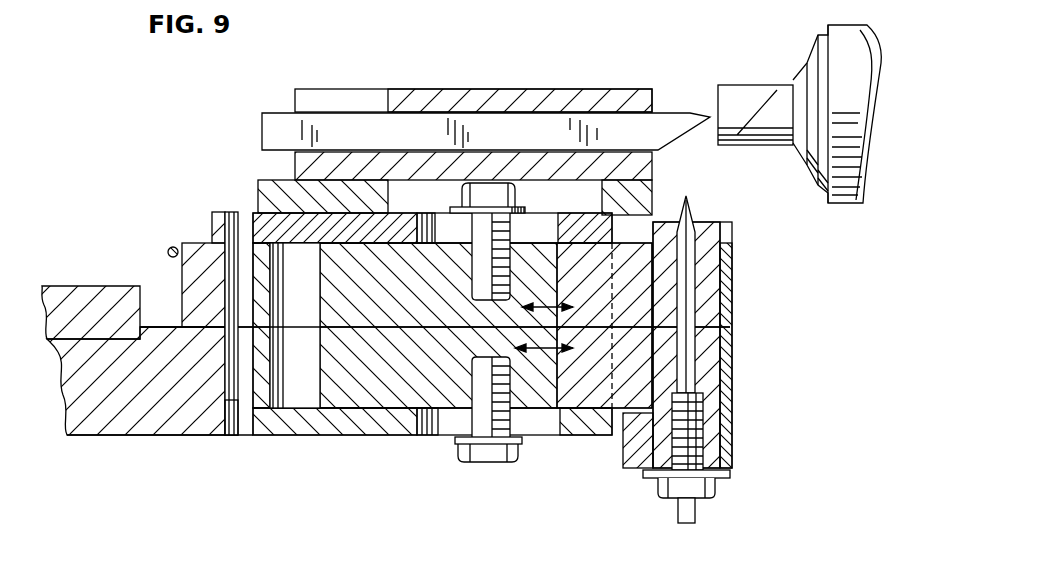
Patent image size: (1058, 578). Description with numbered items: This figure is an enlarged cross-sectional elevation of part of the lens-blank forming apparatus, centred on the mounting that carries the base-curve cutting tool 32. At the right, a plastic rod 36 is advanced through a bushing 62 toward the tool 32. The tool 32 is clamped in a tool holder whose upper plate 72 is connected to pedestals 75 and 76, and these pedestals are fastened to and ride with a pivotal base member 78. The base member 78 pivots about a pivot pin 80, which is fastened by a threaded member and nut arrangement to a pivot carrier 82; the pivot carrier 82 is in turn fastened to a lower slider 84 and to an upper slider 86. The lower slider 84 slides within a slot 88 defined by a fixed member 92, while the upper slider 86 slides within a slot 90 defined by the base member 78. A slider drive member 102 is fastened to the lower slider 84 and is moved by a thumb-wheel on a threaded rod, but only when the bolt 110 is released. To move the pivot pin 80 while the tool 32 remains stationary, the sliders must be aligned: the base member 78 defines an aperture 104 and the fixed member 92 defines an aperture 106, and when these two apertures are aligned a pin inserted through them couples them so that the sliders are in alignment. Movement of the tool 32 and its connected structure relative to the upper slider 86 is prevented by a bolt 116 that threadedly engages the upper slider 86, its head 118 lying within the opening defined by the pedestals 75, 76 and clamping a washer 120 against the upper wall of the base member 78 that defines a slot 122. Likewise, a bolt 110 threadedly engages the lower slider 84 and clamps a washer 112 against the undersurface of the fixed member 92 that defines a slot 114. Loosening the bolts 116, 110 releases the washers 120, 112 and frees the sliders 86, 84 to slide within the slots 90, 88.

The tool 32 is at (668, 128).
The rod 36 is at (752, 96).
The bushing 62 is at (800, 80).
The upper plate 72 is at (628, 102).
The pedestal 75 is at (277, 197).
The pedestal 76 is at (640, 200).
The pivotal base member 78 is at (312, 228).
The pivot pin 80 is at (682, 306).
The pivot carrier 82 is at (704, 358).
The lower slider 84 is at (593, 390).
The upper slider 86 is at (633, 258).
The slot 88 is at (303, 393).
The slot 90 is at (290, 268).
The member 92 is at (387, 423).
The slider drive member 102 is at (722, 448).
The aperture 104 is at (237, 262).
The aperture 106 is at (240, 414).
The bolt 110 is at (488, 410).
The washer 112 is at (516, 437).
The slot 114 is at (452, 415).
The bolt 116 is at (488, 232).
The head 118 is at (518, 196).
The washer 120 is at (524, 207).
The slot 122 is at (437, 226).